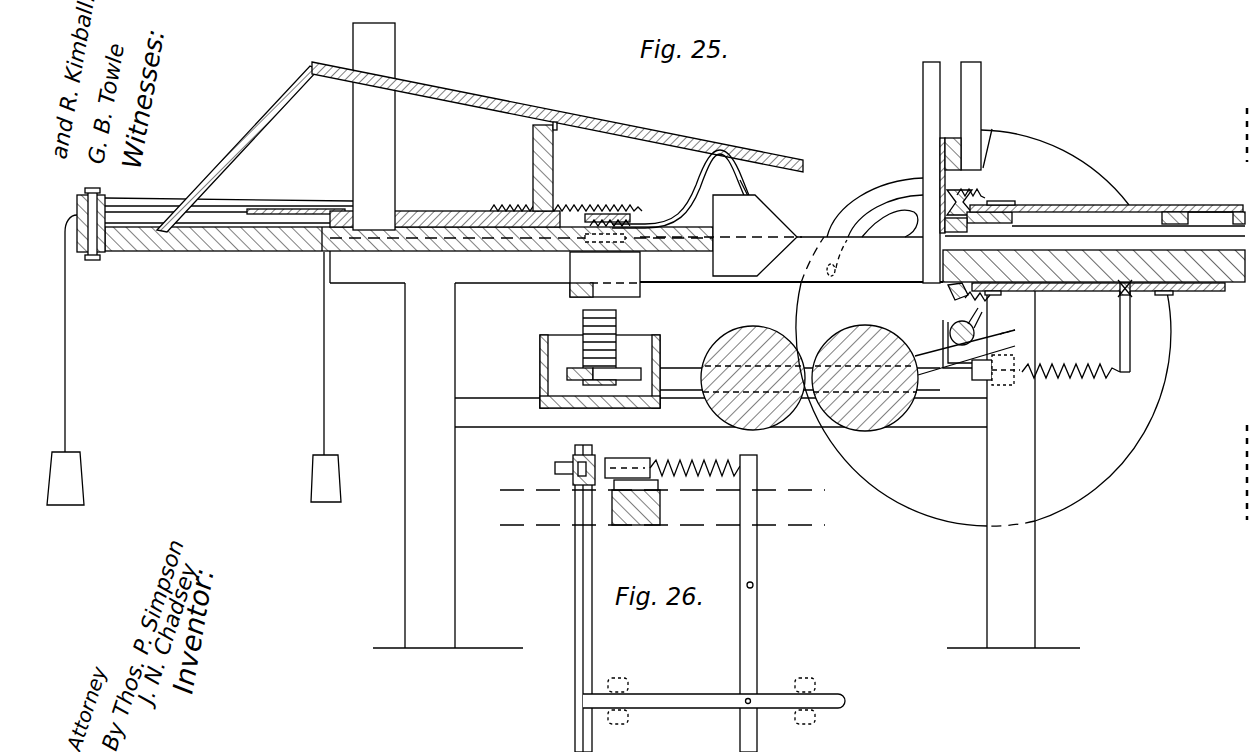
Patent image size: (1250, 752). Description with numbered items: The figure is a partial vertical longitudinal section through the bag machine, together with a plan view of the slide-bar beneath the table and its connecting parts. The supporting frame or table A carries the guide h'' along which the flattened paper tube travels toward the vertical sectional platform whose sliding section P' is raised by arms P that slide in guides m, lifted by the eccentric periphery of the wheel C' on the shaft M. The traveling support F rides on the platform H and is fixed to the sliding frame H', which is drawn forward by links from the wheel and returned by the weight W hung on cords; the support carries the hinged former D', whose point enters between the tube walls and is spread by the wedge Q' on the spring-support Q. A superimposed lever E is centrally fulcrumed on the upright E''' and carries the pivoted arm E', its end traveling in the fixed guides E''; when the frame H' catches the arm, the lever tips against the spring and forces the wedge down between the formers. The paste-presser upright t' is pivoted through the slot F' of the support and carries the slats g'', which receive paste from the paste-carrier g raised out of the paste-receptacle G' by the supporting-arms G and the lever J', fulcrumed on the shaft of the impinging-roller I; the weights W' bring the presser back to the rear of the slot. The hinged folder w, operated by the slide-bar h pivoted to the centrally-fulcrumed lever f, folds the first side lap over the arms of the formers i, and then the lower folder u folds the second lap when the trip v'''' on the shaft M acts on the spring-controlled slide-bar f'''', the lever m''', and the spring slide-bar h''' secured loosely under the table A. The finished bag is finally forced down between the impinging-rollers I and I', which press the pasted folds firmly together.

In FIG. 25, the supporting frame or table A is at (705, 413).
In FIG. 25, the traveling support F is at (409, 253).
In FIG. 25, the slot F' is at (580, 253).
In FIG. 25, the platform H is at (332, 201).
In FIG. 25, the sliding frame H' is at (92, 218).
In FIG. 25, the formers i is at (566, 208).
In FIG. 25, the superimposed lever E is at (557, 117).
In FIG. 25, the pivoted arm E' is at (237, 149).
In FIG. 25, the fixed guides E'' is at (374, 126).
In FIG. 25, the upright E''' is at (558, 166).
In FIG. 25, the spring-support Q is at (683, 189).
In FIG. 25, the wedge Q' is at (755, 187).
In FIG. 25, the former D' is at (721, 230).
In FIG. 25, the upright t' is at (605, 274).
In FIG. 25, the slats g'' is at (621, 293).
In FIG. 25, the supporting-arms G is at (612, 337).
In FIG. 25, the paste-receptacle G' is at (582, 371).
In FIG. 25, the paste-carrier g is at (604, 368).
In FIG. 25, the lever J' is at (800, 359).
In FIG. 25, the impinging-roller I is at (753, 366).
In FIG. 25, the impinging-roller I' is at (865, 367).
In FIG. 25, the eccentric wheel C' is at (983, 327).
In FIG. 25, the arms P is at (973, 136).
In FIG. 25, the sliding section P' is at (916, 172).
In FIG. 25, the guides m is at (981, 114).
In FIG. 25, the hinged folder w is at (960, 186).
In FIG. 25, the slide-bar h is at (1095, 210).
In FIG. 25, the centrally-fulcrumed lever f is at (1203, 225).
In FIG. 25, the guide h'' is at (1213, 228).
In FIG. 25, the spring slide-bar h''' is at (1098, 298).
In FIG. 26, the spring slide-bar h''' is at (714, 699).
In FIG. 25, the lever m''' is at (1139, 297).
In FIG. 26, the lever m''' is at (662, 603).
In FIG. 25, the lower folder u is at (948, 292).
In FIG. 25, the trip v'''' is at (945, 324).
In FIG. 26, the trip v'''' is at (603, 459).
In FIG. 25, the shaft M is at (990, 330).
In FIG. 26, the shaft M is at (575, 549).
In FIG. 25, the spring-controlled slide-bar f'''' is at (1088, 334).
In FIG. 26, the spring-controlled slide-bar f'''' is at (672, 491).
In FIG. 25, the weight W is at (78, 368).
In FIG. 25, the weights W' is at (338, 377).